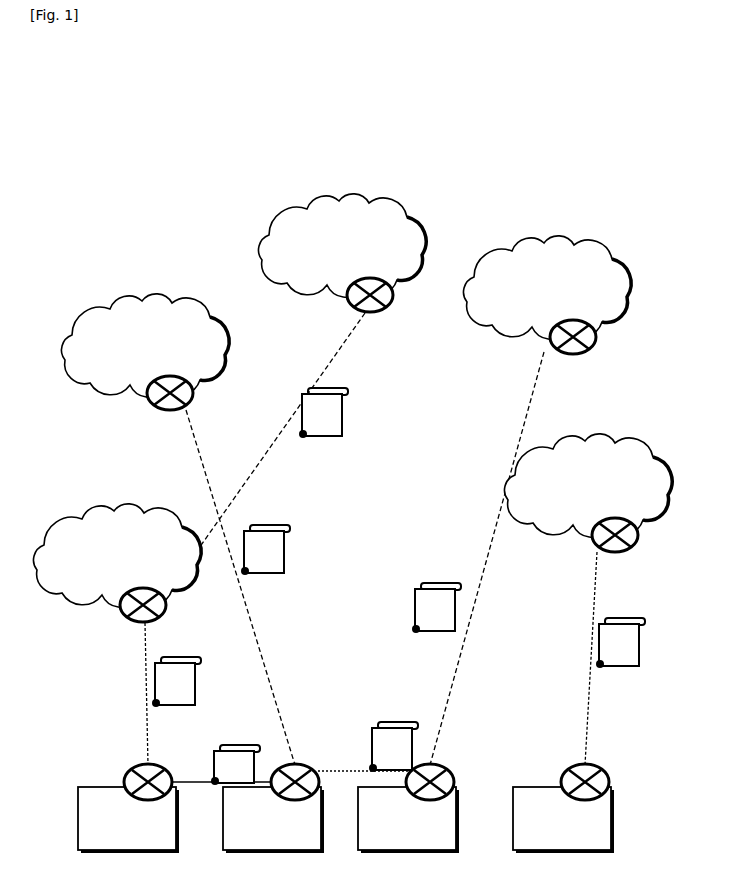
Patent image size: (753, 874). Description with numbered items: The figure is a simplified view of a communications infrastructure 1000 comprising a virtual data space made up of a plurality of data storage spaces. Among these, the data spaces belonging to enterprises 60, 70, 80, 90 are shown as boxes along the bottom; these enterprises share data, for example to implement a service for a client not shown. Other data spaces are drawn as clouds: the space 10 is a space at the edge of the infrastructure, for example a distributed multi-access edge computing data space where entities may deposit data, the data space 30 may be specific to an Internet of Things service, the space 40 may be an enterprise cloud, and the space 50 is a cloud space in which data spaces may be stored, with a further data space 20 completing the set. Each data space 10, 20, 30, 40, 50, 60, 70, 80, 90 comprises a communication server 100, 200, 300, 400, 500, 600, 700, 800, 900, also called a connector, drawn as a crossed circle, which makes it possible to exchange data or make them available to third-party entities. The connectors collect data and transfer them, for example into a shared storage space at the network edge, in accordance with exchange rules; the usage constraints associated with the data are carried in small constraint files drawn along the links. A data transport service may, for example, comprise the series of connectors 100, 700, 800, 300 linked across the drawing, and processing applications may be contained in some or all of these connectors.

The communications infrastructure 1000 is at (210, 182).
The edge data space 10 is at (146, 345).
The data space 20 is at (343, 245).
The IoT service data space 30 is at (548, 287).
The enterprise cloud data space 40 is at (589, 485).
The cloud space 50 is at (118, 555).
The communication server 100 is at (192, 402).
The communication server 200 is at (393, 305).
The communication server 300 is at (596, 346).
The communication server 400 is at (638, 544).
The communication server 500 is at (166, 614).
The enterprise data space 60 is at (128, 820).
The enterprise data space 70 is at (273, 820).
The enterprise data space 80 is at (408, 820).
The enterprise data space 90 is at (563, 820).
The communication server 600 is at (166, 770).
The communication server 700 is at (314, 770).
The communication server 800 is at (450, 770).
The communication server 900 is at (605, 770).